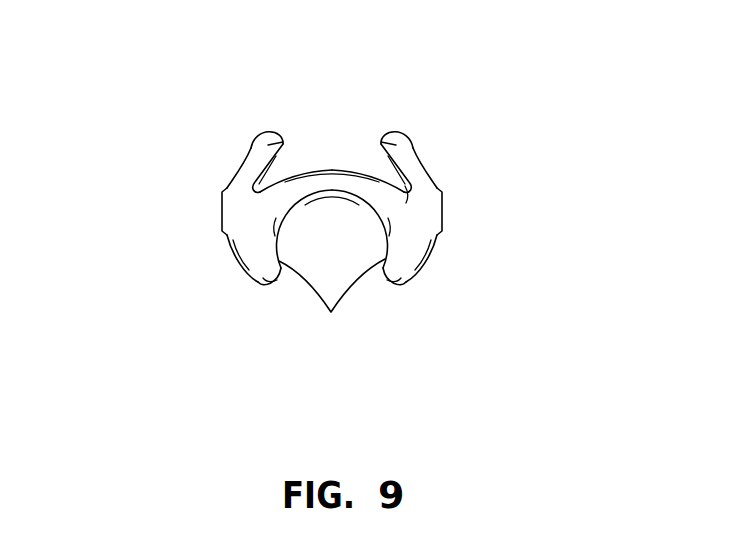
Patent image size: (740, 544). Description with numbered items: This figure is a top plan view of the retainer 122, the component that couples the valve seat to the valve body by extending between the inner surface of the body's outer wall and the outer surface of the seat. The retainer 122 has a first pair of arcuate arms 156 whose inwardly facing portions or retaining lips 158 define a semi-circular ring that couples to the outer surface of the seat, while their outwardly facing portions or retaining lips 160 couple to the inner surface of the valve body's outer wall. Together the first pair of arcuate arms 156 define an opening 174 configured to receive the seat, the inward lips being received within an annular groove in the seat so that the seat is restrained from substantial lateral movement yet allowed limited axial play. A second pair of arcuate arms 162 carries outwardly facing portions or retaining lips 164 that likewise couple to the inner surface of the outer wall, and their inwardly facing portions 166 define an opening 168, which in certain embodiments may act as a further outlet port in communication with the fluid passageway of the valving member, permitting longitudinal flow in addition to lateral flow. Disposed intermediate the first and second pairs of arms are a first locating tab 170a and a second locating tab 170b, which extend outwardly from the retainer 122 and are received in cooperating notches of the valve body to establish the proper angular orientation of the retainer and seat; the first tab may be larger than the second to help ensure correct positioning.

The retainer 122 is at (533, 87).
The first pair of arcuate arms 156 is at (264, 290).
The inwardly facing portions or retaining lips 158 is at (332, 304).
The outwardly facing portions or retaining lips 160 is at (246, 268).
The second pair of arcuate arms 162 is at (270, 132).
The outwardly facing portions or retaining lips 164 is at (252, 152).
The inwardly facing portions 166 is at (384, 138).
The opening 168 is at (357, 157).
The first locating tab 170a is at (221, 211).
The second locating tab 170b is at (443, 211).
The opening 174 is at (363, 248).